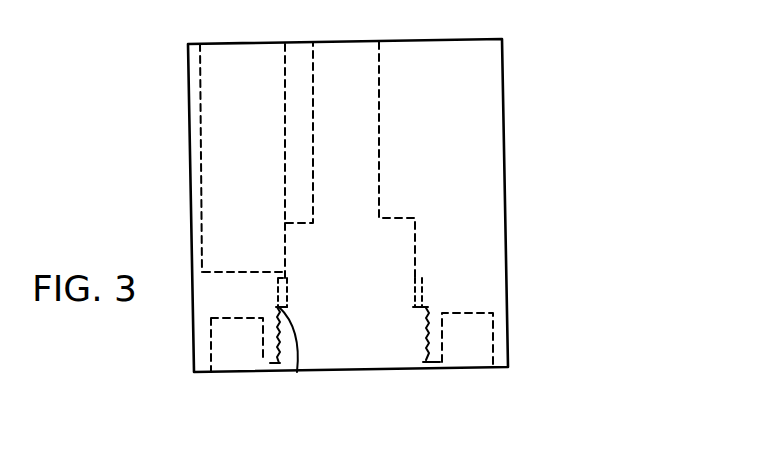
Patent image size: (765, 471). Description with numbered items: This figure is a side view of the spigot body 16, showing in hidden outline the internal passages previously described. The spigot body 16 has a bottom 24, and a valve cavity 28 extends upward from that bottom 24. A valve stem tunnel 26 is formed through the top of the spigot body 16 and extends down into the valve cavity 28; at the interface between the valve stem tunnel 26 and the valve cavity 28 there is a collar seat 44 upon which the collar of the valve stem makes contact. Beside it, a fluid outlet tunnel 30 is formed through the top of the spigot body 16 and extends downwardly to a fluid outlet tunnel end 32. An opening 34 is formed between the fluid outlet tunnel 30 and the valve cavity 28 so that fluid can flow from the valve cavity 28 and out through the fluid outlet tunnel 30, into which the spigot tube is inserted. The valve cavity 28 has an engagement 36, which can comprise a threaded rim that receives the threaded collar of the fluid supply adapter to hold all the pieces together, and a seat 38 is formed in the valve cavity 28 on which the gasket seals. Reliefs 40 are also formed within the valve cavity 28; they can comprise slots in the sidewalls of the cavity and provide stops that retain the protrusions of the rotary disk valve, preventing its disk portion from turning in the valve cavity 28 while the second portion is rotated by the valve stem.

The spigot body 16 is at (607, 225).
The bottom 24 is at (508, 367).
The valve stem tunnel 26 is at (360, 143).
The valve cavity 28 is at (382, 352).
The fluid outlet tunnel 30 is at (252, 138).
The fluid outlet tunnel end 32 is at (229, 272).
The opening 34 is at (287, 242).
The engagement 36 is at (272, 350).
The seat 38 is at (297, 372).
The relief 40 is at (422, 280).
The collar seat 44 is at (395, 218).